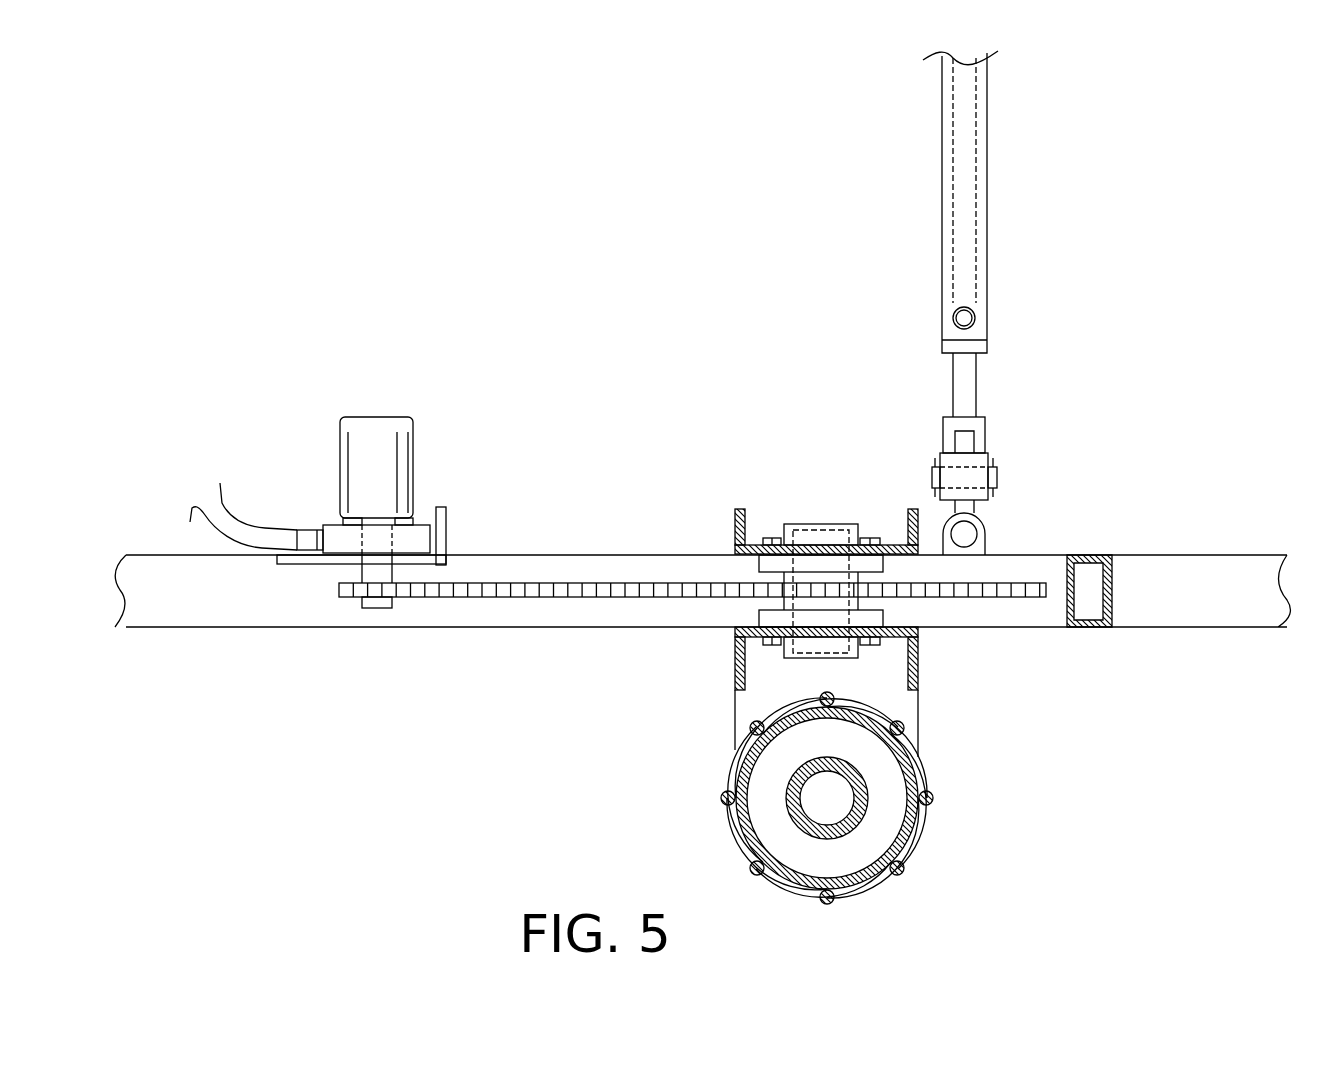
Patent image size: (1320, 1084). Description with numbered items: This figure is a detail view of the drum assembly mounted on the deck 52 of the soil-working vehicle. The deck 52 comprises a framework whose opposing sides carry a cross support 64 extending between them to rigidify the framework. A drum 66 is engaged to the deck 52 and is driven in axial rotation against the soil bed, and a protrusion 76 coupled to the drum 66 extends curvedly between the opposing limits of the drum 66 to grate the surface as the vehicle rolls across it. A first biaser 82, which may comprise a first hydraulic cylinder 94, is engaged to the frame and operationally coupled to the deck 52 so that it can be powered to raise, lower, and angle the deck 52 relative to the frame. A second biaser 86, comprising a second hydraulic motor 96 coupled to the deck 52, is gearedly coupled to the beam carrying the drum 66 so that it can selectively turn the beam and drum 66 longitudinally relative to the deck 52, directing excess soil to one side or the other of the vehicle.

The deck 52 is at (604, 612).
The cross support 64 is at (1087, 585).
The drum 66 is at (913, 742).
The protrusion 76 is at (928, 778).
The first biaser 82 is at (973, 182).
The first hydraulic cylinder 94 is at (977, 253).
The second biaser 86 is at (373, 430).
The second hydraulic motor 96 is at (405, 430).